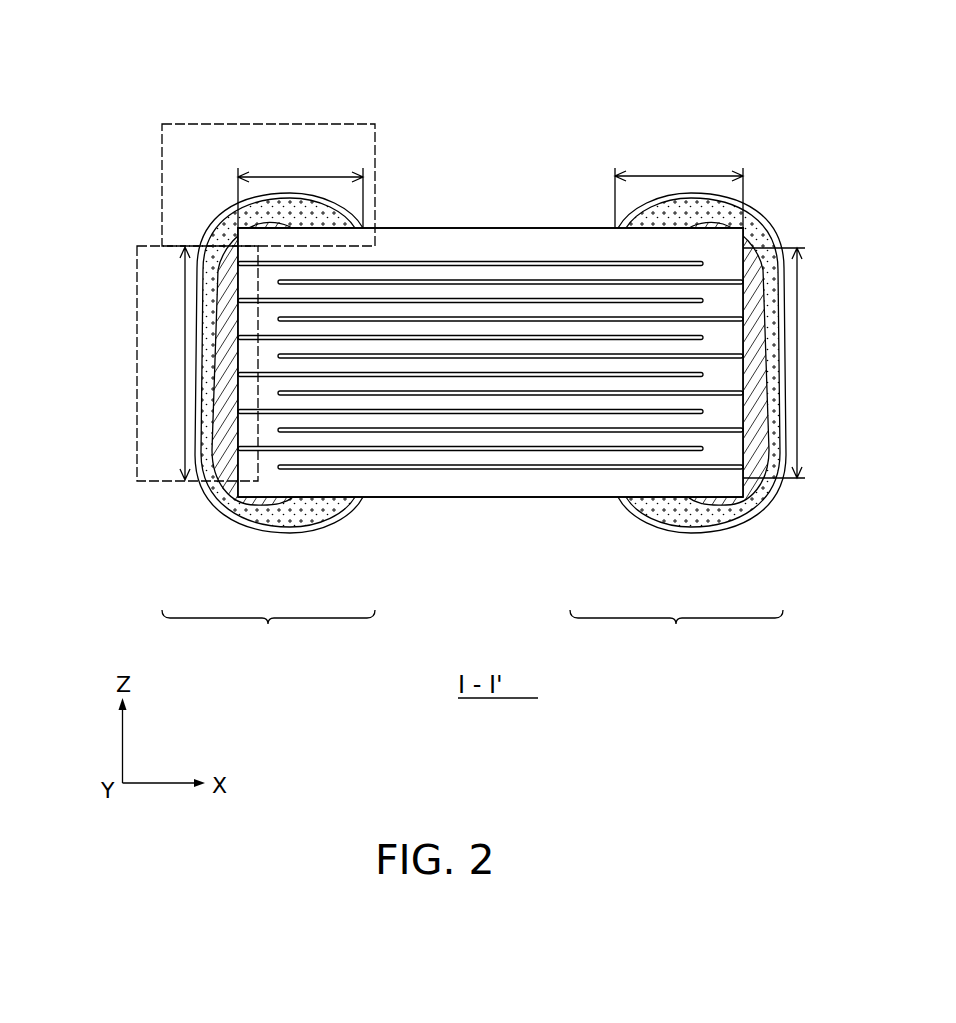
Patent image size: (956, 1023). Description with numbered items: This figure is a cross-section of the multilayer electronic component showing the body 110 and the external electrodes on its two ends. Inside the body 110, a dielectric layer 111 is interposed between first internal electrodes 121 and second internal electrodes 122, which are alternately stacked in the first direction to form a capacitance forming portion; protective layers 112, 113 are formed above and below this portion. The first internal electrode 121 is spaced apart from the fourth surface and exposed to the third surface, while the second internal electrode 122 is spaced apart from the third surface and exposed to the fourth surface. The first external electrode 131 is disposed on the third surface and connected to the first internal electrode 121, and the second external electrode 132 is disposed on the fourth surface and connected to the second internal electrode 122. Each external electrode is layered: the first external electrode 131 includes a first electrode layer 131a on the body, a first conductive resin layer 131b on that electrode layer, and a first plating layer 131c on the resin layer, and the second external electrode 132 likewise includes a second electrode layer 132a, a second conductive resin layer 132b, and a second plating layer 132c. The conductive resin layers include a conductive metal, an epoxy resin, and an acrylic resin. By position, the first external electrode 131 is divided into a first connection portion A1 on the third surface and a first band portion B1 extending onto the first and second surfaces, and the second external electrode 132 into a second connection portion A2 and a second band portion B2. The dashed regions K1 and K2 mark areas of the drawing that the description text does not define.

The body 110 is at (490, 336).
The dielectric layer 111 is at (500, 270).
The protective layer 112 is at (583, 243).
The protective layer 113 is at (475, 498).
The first internal electrode 121 is at (401, 262).
The second internal electrode 122 is at (443, 282).
The first external electrode 131 is at (268, 631).
The first electrode layer 131a is at (250, 515).
The first conductive resin layer 131b is at (277, 518).
The first plating layer 131c is at (322, 528).
The second external electrode 132 is at (676, 632).
The second electrode layer 132a is at (668, 530).
The second conductive resin layer 132b is at (708, 523).
The second plating layer 132c is at (728, 535).
The first corner region K1 is at (262, 124).
The second corner region K2 is at (137, 350).
The first connection portion A1 is at (171, 363).
The second connection portion A2 is at (788, 363).
The first band portion B1 is at (300, 188).
The second band portion B2 is at (679, 188).